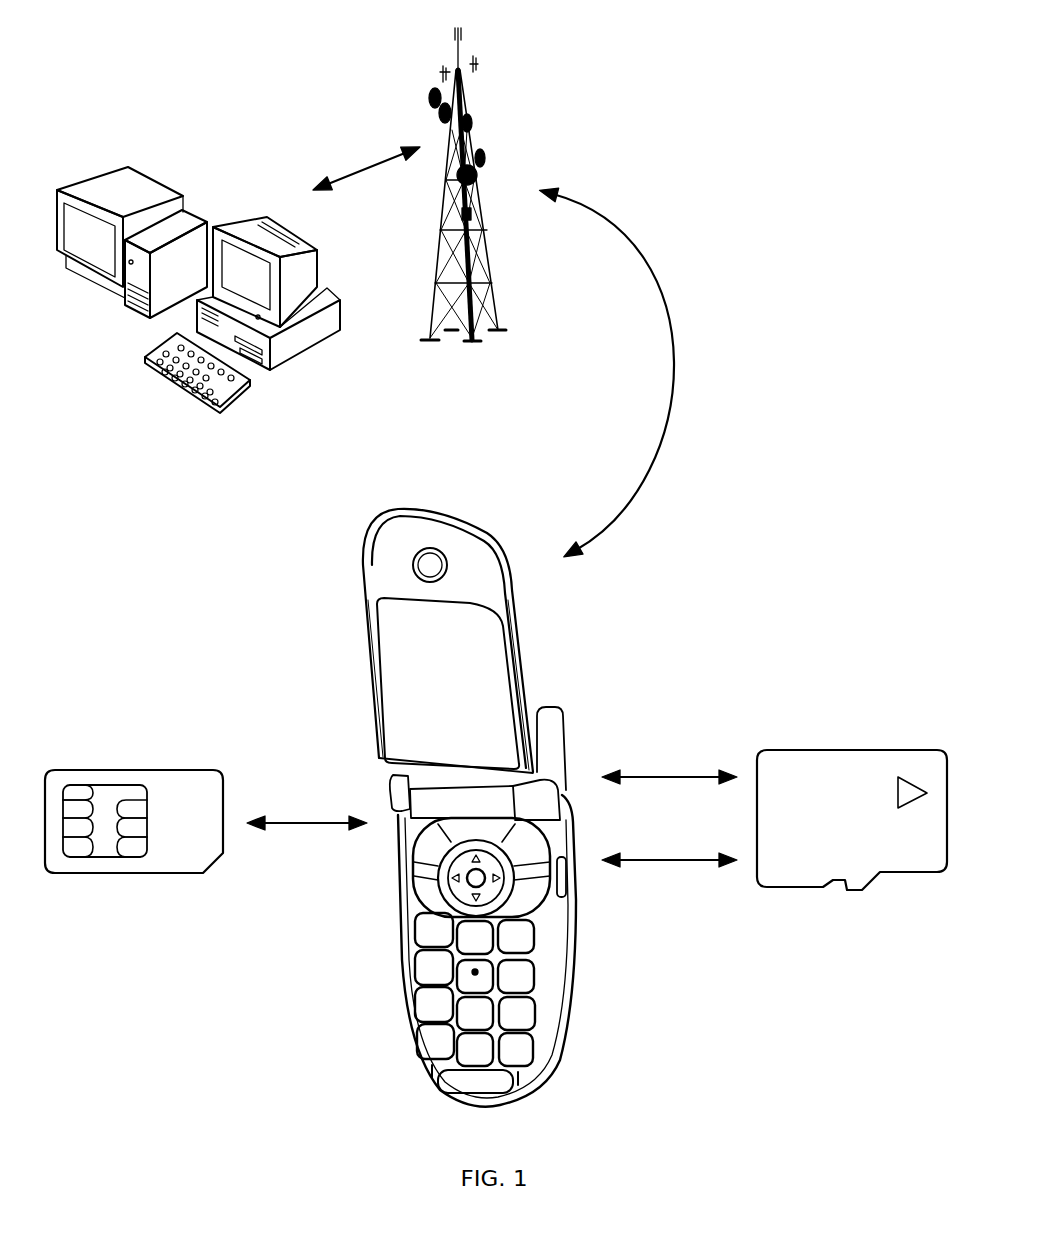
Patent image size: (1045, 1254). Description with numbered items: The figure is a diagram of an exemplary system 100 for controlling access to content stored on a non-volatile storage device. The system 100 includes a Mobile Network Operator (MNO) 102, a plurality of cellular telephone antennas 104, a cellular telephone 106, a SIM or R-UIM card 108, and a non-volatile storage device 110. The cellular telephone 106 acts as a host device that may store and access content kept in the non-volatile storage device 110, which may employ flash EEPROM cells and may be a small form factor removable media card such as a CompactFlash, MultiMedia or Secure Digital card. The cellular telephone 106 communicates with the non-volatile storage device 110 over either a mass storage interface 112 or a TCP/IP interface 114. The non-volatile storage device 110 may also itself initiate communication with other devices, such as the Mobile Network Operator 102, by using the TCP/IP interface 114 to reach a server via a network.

The system 100 is at (822, 1043).
The Mobile Network Operator (MNO) 102 is at (165, 83).
The cellular telephone antennas 104 is at (508, 87).
The cellular telephone 106 is at (490, 537).
The SIM or R-UIM card 108 is at (158, 770).
The non-volatile storage device 110 is at (838, 748).
The mass storage interface 112 is at (662, 777).
The TCP/IP interface 114 is at (667, 862).